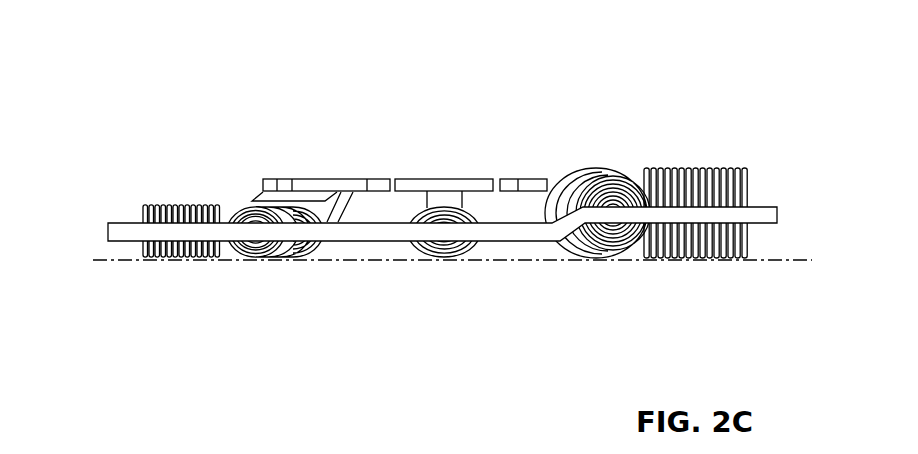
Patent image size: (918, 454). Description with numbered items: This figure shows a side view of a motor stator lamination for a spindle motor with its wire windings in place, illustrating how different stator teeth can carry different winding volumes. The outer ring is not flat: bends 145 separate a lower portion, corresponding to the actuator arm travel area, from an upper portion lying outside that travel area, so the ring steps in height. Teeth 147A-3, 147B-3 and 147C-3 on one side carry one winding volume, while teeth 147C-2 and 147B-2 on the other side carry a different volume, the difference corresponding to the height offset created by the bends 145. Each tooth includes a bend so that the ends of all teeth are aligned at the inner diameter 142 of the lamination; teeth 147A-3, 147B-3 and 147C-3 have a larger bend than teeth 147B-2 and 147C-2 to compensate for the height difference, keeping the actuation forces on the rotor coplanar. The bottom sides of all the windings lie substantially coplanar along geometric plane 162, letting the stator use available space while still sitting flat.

The inner diameter 142 is at (283, 179).
The bends 145 is at (565, 222).
The tooth 147A-3 is at (441, 170).
The tooth 147B-3 is at (229, 190).
The tooth 147C-3 is at (182, 188).
The tooth 147C-2 is at (593, 162).
The tooth 147B-2 is at (693, 162).
The geometric plane 162 is at (810, 260).